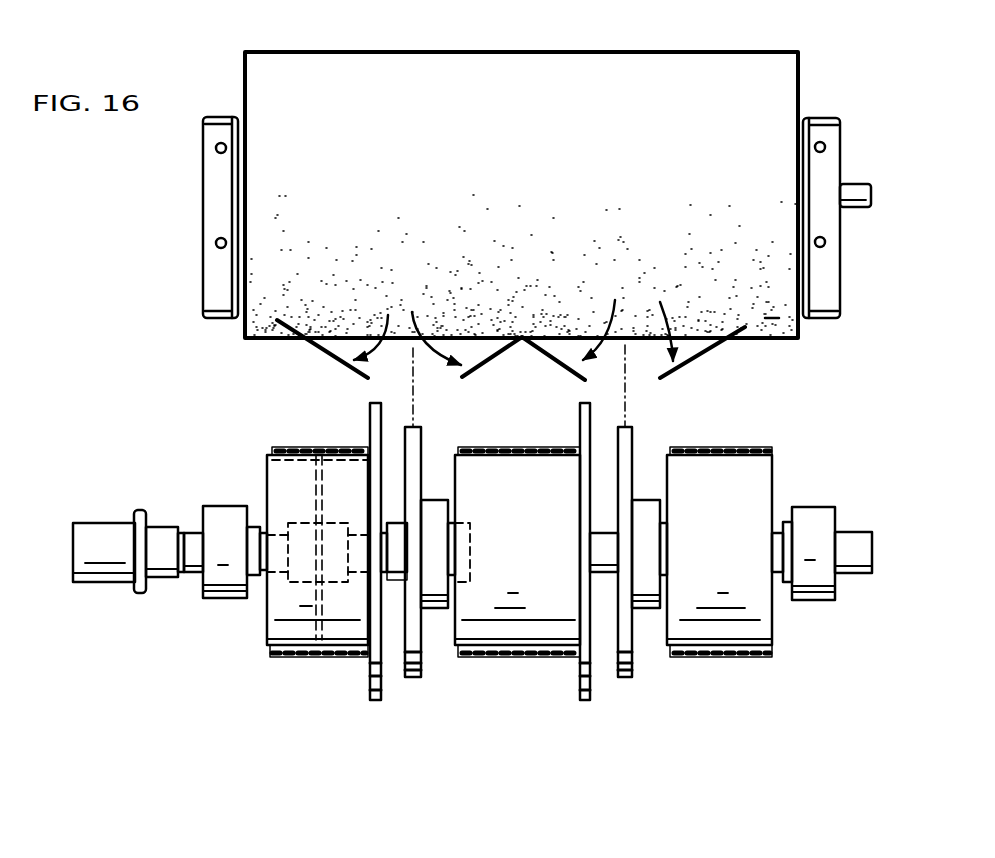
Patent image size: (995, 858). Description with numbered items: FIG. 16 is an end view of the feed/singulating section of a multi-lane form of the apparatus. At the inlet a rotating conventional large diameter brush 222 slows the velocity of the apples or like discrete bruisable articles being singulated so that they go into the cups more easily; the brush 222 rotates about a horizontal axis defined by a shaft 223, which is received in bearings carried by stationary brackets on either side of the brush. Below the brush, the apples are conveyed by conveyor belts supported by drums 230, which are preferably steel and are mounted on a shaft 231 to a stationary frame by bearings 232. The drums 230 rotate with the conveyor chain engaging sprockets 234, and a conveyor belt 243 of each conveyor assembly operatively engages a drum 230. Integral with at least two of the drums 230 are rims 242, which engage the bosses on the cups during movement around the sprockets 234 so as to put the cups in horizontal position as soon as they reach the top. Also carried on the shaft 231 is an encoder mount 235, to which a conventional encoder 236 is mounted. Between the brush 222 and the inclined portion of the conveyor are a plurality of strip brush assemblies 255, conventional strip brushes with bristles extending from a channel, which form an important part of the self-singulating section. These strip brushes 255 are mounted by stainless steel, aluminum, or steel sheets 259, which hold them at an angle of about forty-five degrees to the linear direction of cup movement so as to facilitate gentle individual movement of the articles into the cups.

The brush 222 is at (603, 41).
The shaft 223 is at (853, 186).
The strip brush assemblies 255 is at (513, 325).
The sheets 259 is at (327, 353).
The drums 230 is at (287, 661).
The shaft 231 is at (196, 577).
The bearings 232 is at (222, 512).
The sprockets 234 is at (411, 680).
The encoder mount 235 is at (141, 597).
The encoder 236 is at (87, 583).
The rims 242 is at (370, 427).
The conveyor belt 243 is at (287, 446).